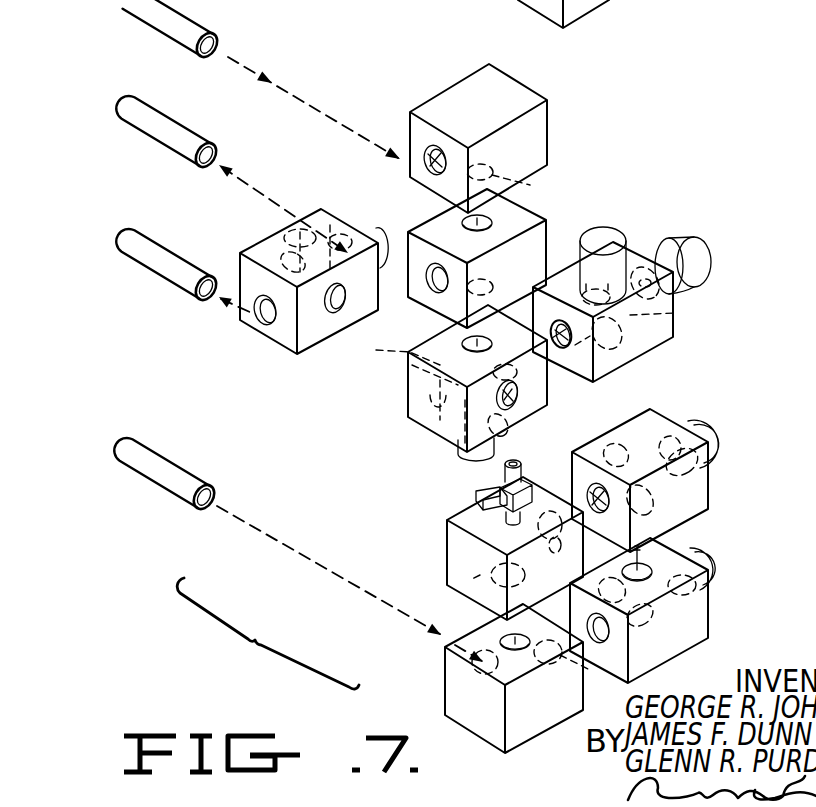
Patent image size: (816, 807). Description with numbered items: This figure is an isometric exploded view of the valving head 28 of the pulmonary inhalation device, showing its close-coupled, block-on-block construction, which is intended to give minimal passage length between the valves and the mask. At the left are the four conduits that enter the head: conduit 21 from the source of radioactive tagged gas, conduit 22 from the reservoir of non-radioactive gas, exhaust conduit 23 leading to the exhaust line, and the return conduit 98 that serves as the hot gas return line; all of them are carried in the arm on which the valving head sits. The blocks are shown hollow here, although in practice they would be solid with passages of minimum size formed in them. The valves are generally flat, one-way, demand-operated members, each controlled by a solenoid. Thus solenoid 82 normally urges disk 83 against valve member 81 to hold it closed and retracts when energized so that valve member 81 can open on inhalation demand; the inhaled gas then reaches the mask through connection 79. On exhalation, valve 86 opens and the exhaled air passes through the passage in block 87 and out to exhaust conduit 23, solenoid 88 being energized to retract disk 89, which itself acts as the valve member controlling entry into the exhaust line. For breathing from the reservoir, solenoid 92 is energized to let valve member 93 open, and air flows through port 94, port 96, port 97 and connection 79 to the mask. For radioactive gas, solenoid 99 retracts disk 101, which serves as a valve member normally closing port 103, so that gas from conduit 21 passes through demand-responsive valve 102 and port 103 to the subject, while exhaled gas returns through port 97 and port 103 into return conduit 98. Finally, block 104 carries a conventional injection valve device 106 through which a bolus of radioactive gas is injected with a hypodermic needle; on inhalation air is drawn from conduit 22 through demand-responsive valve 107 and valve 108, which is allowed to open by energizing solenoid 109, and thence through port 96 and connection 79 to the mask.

The conduit 21 is at (146, 18).
The return conduit 98 is at (157, 135).
The exhaust conduit 23 is at (158, 273).
The conduit 22 is at (157, 480).
The valving head 28 is at (183, 622).
The block 87 is at (253, 248).
The disk 89 is at (298, 245).
The solenoid 88 is at (383, 212).
The valve 86 is at (342, 307).
The one-way demand-responsive valve 102 is at (488, 218).
The port 103 is at (487, 335).
The disk 101 is at (408, 407).
The solenoid 99 is at (456, 452).
The port 96 is at (518, 397).
The port 97 is at (556, 350).
The valve member 81 is at (633, 362).
The solenoid 82 is at (615, 241).
The connection 79 is at (673, 248).
The disk 83 is at (637, 315).
The block 104 is at (445, 535).
The demand-responsive valve 107 is at (480, 573).
The valve 108 is at (560, 546).
The injection valve device 106 is at (503, 480).
The solenoid 109 is at (717, 450).
The solenoid 92 is at (717, 583).
The port 94 is at (655, 528).
The valve member 93 is at (600, 643).